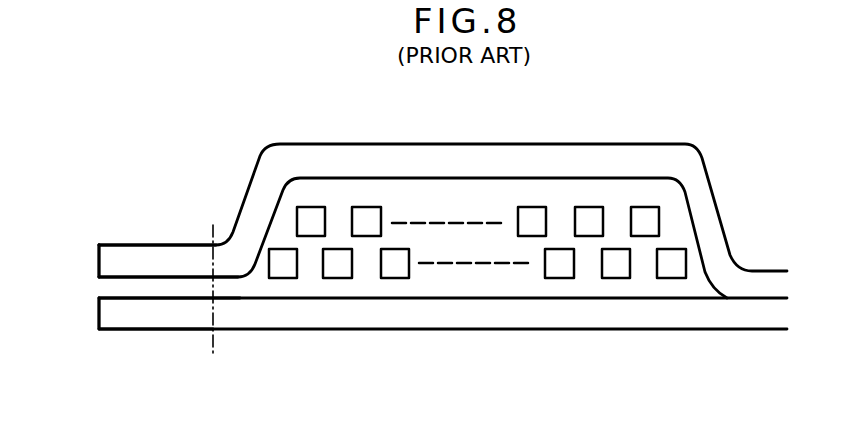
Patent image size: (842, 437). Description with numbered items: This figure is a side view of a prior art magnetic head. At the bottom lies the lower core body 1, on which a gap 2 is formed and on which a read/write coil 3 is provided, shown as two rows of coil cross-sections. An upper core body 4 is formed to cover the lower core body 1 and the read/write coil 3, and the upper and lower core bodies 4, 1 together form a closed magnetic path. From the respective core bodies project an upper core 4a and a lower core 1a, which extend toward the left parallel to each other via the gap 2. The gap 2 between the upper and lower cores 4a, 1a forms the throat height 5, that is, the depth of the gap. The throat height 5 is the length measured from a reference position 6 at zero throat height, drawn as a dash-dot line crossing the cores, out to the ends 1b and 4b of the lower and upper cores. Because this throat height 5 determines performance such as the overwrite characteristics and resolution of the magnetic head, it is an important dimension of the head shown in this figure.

The lower core body 1 is at (437, 322).
The lower core 1a is at (153, 322).
The end of lower core 1b is at (98, 320).
The gap 2 is at (110, 284).
The read/write coil 3 is at (310, 216).
The upper core body 4 is at (433, 165).
The upper core 4a is at (113, 256).
The end of upper core 4b is at (100, 275).
The throat height 5 is at (89, 237).
The reference position 6 is at (213, 338).